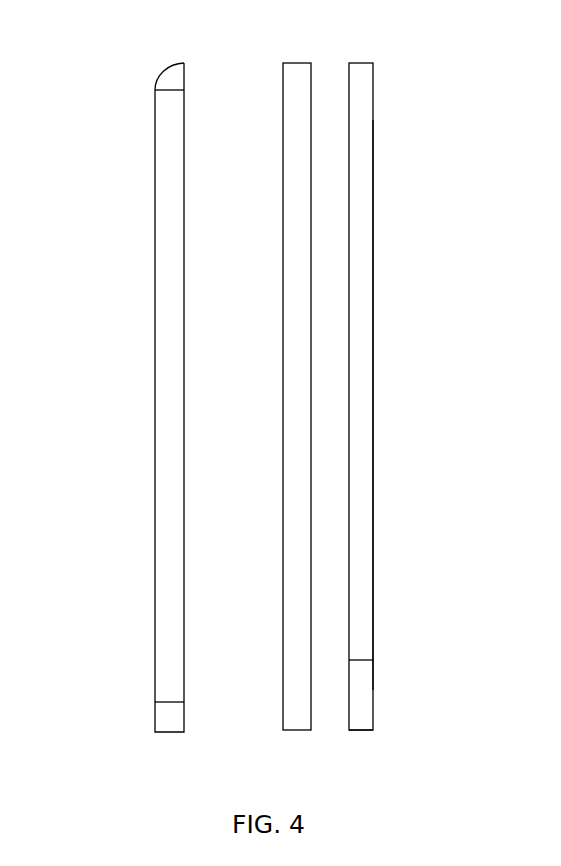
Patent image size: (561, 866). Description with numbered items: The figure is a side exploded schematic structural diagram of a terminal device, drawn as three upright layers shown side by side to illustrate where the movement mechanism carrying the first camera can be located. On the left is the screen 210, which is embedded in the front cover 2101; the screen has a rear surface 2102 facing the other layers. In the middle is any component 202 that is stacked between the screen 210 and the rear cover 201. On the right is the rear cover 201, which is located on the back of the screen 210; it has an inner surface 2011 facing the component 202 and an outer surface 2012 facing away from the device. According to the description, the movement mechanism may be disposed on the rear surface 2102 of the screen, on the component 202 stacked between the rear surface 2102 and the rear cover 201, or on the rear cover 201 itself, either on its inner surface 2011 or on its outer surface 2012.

The screen 210 is at (173, 256).
The front cover 2101 is at (162, 85).
The rear surface of the screen 2102 is at (185, 107).
The component 202 is at (293, 92).
The rear cover 201 is at (360, 120).
The outer surface of the rear cover 2012 is at (375, 423).
The inner surface of the rear cover 2011 is at (348, 673).